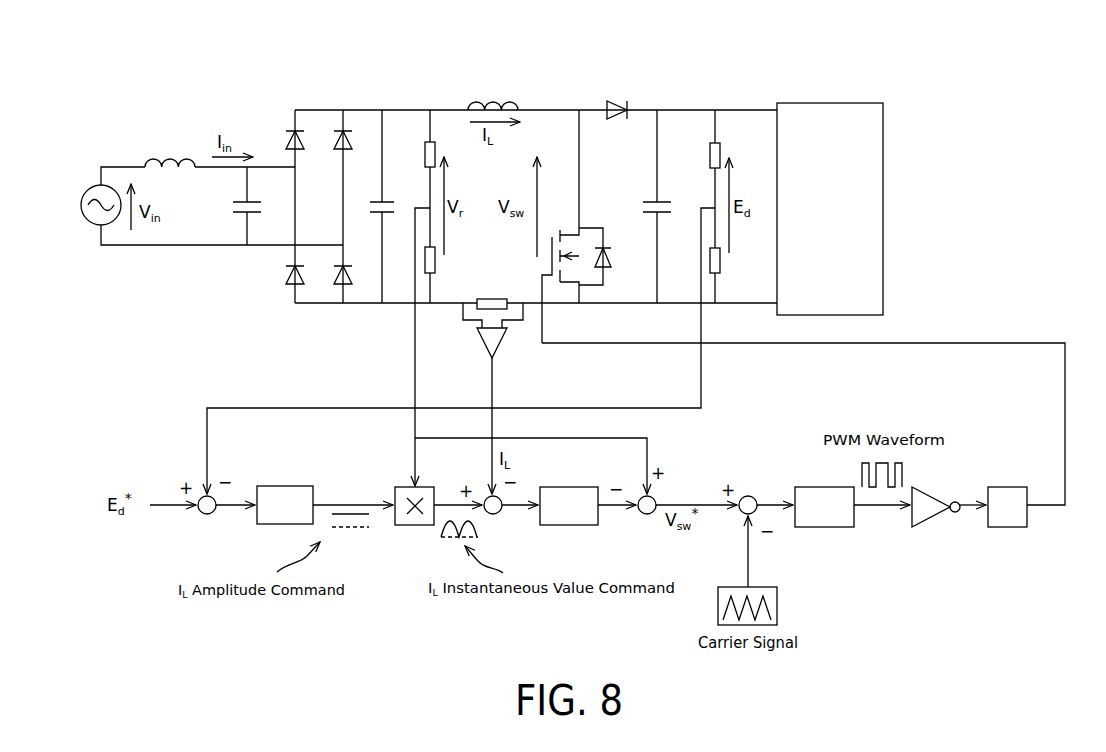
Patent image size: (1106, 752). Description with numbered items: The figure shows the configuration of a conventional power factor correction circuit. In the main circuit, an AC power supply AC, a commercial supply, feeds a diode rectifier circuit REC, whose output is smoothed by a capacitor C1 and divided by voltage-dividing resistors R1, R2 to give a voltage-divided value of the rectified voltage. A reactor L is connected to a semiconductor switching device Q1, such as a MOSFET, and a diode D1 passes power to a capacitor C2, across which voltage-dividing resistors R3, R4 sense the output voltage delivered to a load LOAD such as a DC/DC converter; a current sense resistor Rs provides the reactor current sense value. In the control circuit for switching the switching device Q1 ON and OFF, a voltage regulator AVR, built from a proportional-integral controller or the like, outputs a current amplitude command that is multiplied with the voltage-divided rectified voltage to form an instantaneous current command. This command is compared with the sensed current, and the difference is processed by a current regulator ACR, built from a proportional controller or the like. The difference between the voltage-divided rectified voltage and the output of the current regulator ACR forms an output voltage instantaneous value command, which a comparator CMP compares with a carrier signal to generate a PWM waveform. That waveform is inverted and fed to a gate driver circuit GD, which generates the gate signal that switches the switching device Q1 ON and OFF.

The AC power supply AC is at (83, 205).
The diode rectifier circuit REC is at (313, 102).
The capacitor C1 is at (372, 206).
The voltage-dividing resistor R1 is at (416, 159).
The voltage-dividing resistor R2 is at (442, 255).
The reactor L is at (493, 91).
The semiconductor switching device Q1 is at (571, 223).
The diode D1 is at (618, 95).
The capacitor C2 is at (644, 206).
The voltage-dividing resistor R3 is at (700, 159).
The voltage-dividing resistor R4 is at (727, 255).
The load LOAD is at (830, 103).
The current sense resistor Rs is at (493, 317).
The voltage regulator AVR is at (285, 505).
The current regulator ACR is at (569, 506).
The comparator CMP is at (824, 507).
The gate driver circuit GD is at (1007, 507).